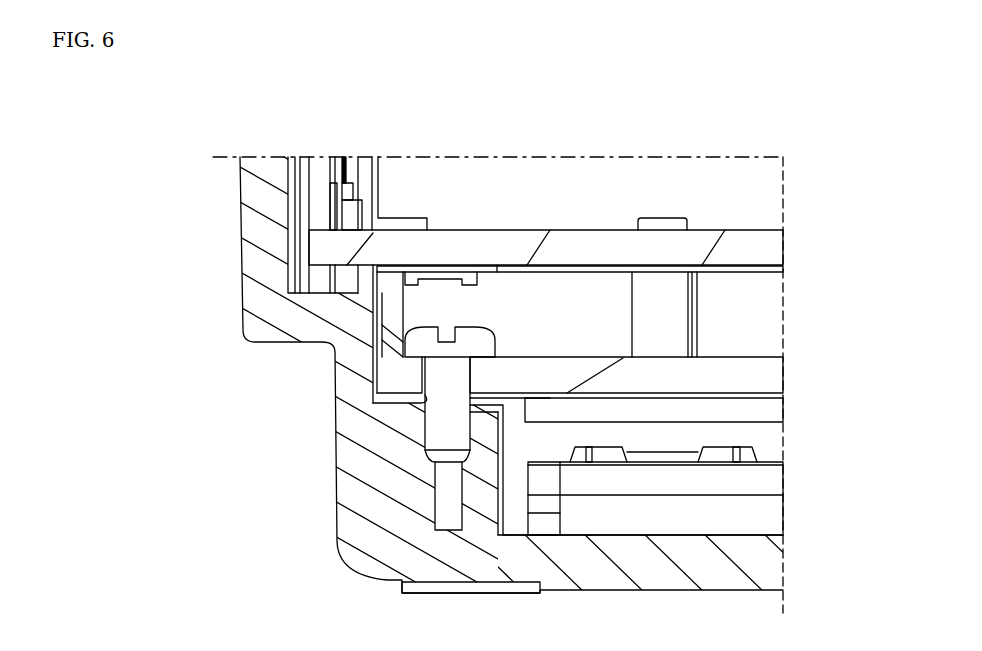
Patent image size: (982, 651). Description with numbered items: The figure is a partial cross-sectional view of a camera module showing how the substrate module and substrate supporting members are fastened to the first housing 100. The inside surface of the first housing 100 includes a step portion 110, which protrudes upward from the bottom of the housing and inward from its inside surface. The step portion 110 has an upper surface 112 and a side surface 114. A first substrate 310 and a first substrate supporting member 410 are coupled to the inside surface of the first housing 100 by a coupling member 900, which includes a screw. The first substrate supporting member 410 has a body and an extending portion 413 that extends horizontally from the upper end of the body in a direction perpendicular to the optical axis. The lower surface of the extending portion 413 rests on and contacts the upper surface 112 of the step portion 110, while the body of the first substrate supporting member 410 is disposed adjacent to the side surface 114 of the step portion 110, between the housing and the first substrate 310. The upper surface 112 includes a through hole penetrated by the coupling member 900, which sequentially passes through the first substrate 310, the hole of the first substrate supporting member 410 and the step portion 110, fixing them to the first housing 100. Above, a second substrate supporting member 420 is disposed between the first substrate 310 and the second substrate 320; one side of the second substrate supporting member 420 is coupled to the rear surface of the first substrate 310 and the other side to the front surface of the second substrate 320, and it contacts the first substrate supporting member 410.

The first housing 100 is at (260, 258).
The step portion 110 is at (420, 450).
The upper surface 112 is at (405, 407).
The side surface 114 is at (500, 440).
The first substrate 310 is at (753, 380).
The second substrate 320 is at (743, 243).
The first substrate supporting member 410 is at (505, 450).
The extending portion 413 is at (400, 406).
The second substrate supporting member 420 is at (387, 312).
The coupling member 900 is at (468, 338).